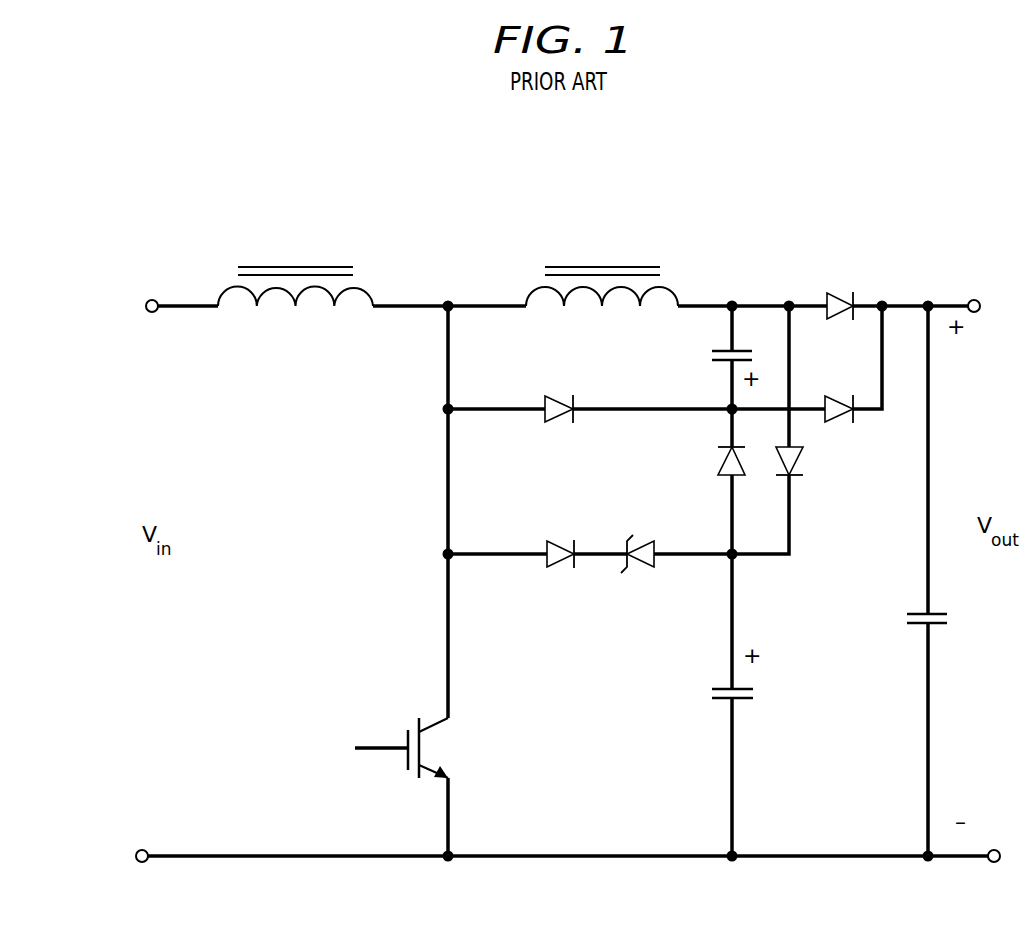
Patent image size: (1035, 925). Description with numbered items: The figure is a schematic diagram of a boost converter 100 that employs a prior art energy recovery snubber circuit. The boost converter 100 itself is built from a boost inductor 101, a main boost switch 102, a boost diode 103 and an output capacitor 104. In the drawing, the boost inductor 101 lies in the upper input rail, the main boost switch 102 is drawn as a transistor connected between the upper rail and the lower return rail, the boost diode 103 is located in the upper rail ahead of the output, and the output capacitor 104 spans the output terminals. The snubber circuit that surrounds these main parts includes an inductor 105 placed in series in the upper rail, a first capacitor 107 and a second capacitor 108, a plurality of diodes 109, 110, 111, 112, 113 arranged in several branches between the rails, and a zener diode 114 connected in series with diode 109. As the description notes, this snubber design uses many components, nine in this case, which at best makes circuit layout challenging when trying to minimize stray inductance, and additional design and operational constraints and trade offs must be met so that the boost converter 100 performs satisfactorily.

The boost converter 100 is at (763, 214).
The boost inductor 101 is at (297, 266).
The main boost switch 102 is at (408, 734).
The boost diode 103 is at (836, 296).
The output capacitor 104 is at (948, 620).
The inductor 105 is at (601, 266).
The first capacitor 107 is at (754, 694).
The second capacitor 108 is at (712, 356).
The diode 109 is at (558, 565).
The diode 110 is at (718, 462).
The diode 111 is at (557, 398).
The diode 112 is at (839, 398).
The diode 113 is at (803, 462).
The zener diode 114 is at (639, 567).